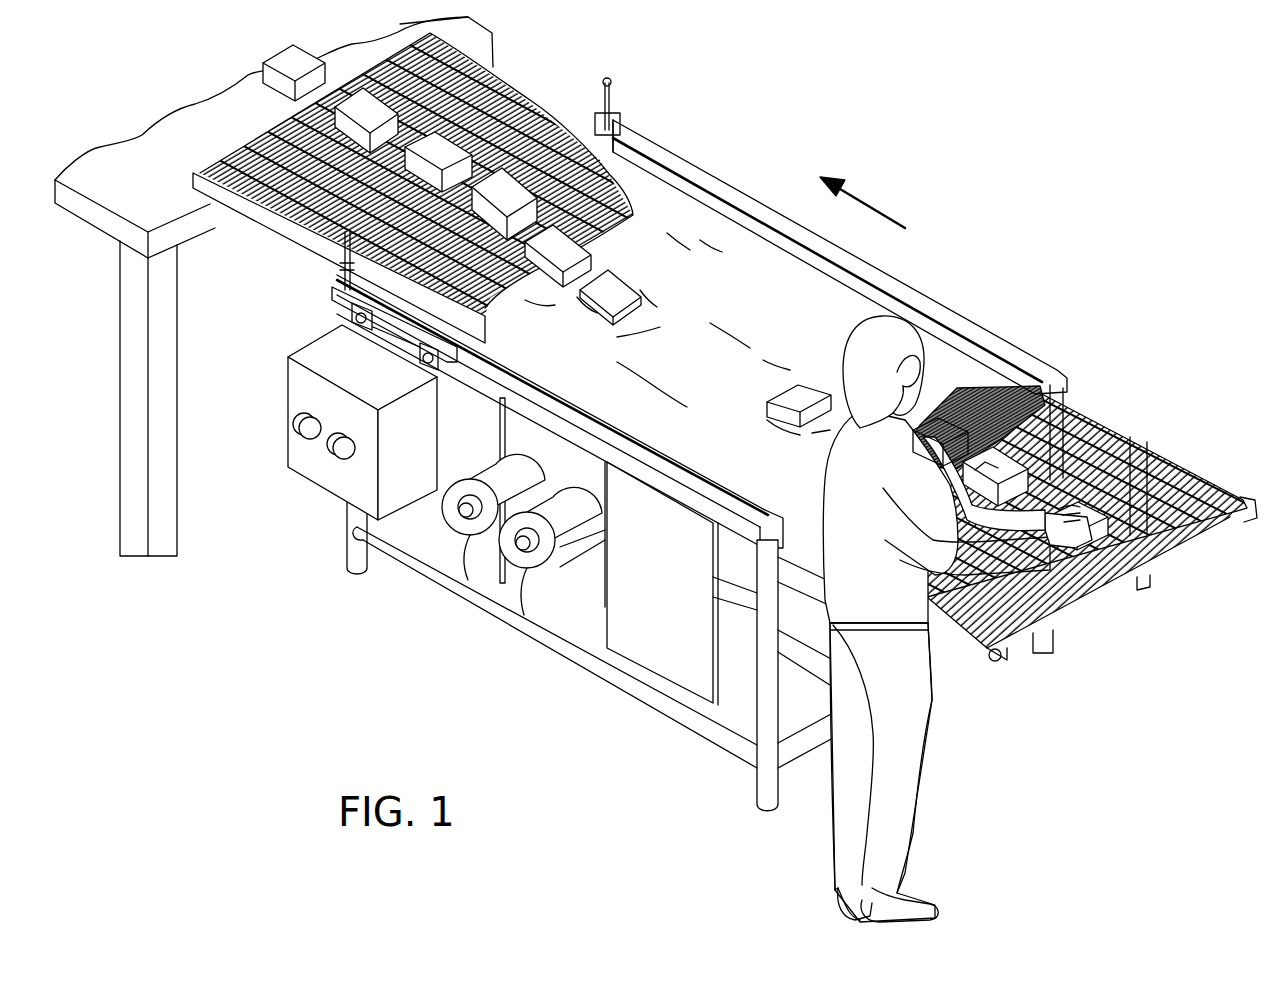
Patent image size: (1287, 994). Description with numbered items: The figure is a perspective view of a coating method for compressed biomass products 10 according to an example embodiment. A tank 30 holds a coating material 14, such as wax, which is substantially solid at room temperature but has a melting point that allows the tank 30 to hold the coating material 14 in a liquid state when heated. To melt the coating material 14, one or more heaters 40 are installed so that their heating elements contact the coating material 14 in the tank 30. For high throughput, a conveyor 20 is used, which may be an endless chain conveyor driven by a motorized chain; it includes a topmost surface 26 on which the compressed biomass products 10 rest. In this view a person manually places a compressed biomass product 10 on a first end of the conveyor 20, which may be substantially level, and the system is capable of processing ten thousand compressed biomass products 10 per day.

The compressed biomass product 10 is at (928, 410).
The coating material 14 is at (710, 250).
The conveyor 20 is at (1180, 472).
The topmost surface 26 is at (530, 95).
The tank 30 is at (985, 382).
The heater 40 is at (477, 565).